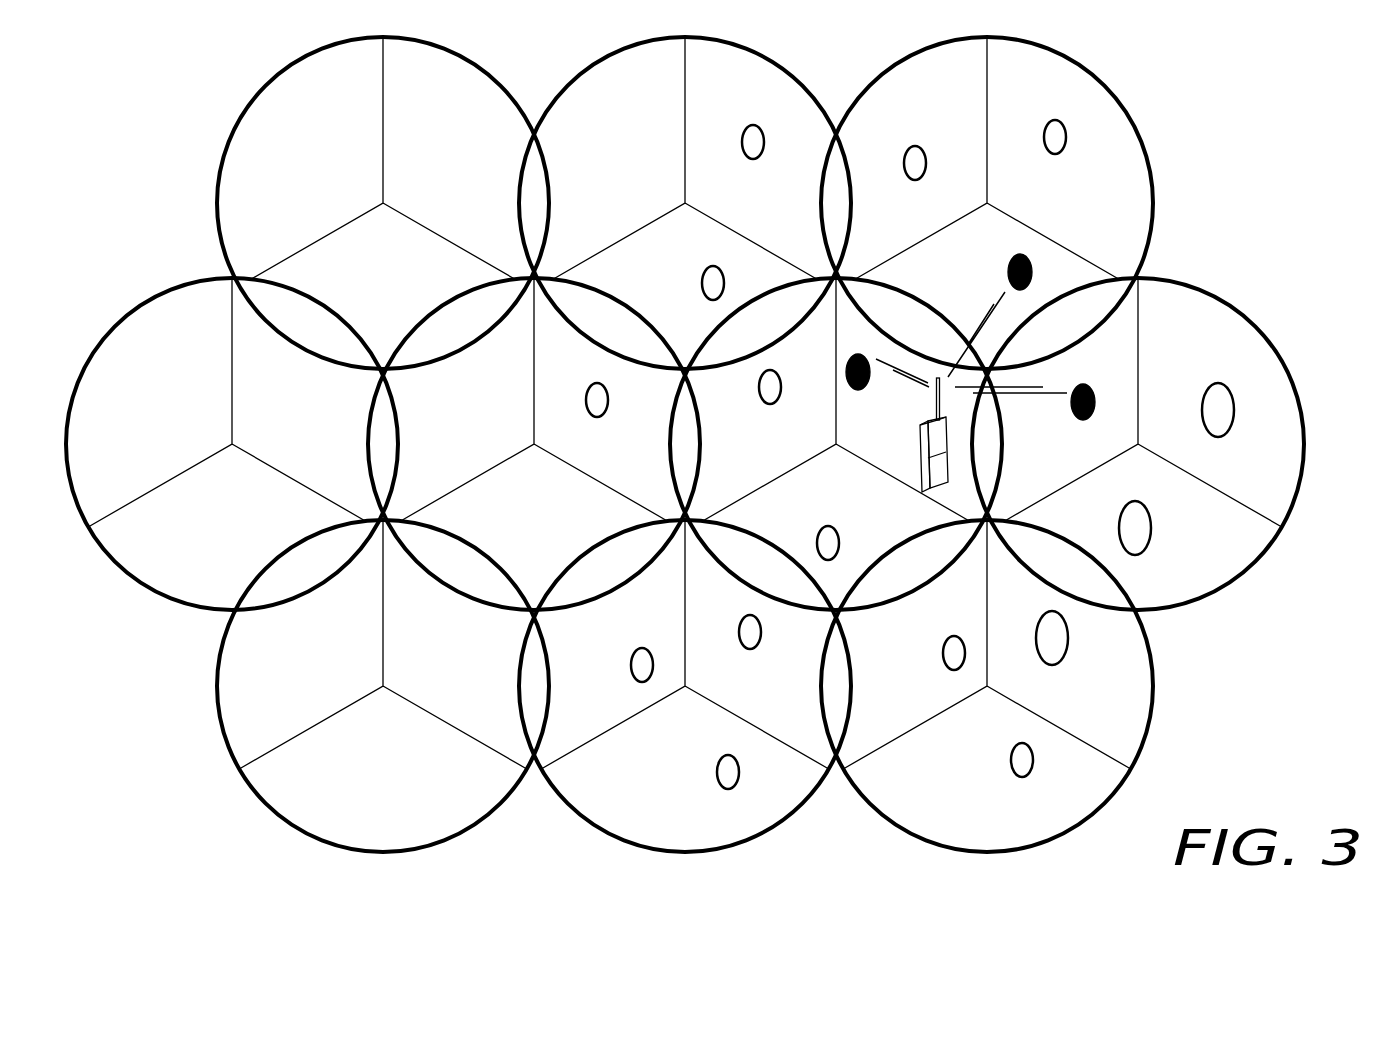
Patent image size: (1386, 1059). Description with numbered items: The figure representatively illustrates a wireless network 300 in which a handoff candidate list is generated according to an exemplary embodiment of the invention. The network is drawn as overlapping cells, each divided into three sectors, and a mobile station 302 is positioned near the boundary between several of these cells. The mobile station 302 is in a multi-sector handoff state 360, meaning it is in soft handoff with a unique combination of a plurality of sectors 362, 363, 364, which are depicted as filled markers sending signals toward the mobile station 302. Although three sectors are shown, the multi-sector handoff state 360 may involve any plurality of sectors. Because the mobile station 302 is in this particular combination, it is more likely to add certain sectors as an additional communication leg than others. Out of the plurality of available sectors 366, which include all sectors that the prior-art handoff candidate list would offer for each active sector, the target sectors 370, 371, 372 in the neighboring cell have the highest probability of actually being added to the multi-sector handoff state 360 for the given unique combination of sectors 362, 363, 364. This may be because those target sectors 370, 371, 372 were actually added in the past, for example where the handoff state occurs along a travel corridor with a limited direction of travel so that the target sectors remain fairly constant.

The wireless network 300 is at (1221, 730).
The mobile station 302 is at (925, 463).
The multi-sector handoff state 360 is at (1010, 417).
The sector 362 is at (933, 285).
The sector 363 is at (845, 435).
The sector 364 is at (1086, 373).
The available sectors 366 is at (738, 203).
The target sector 370 is at (1080, 712).
The target sector 371 is at (1171, 563).
The target sector 372 is at (1171, 363).